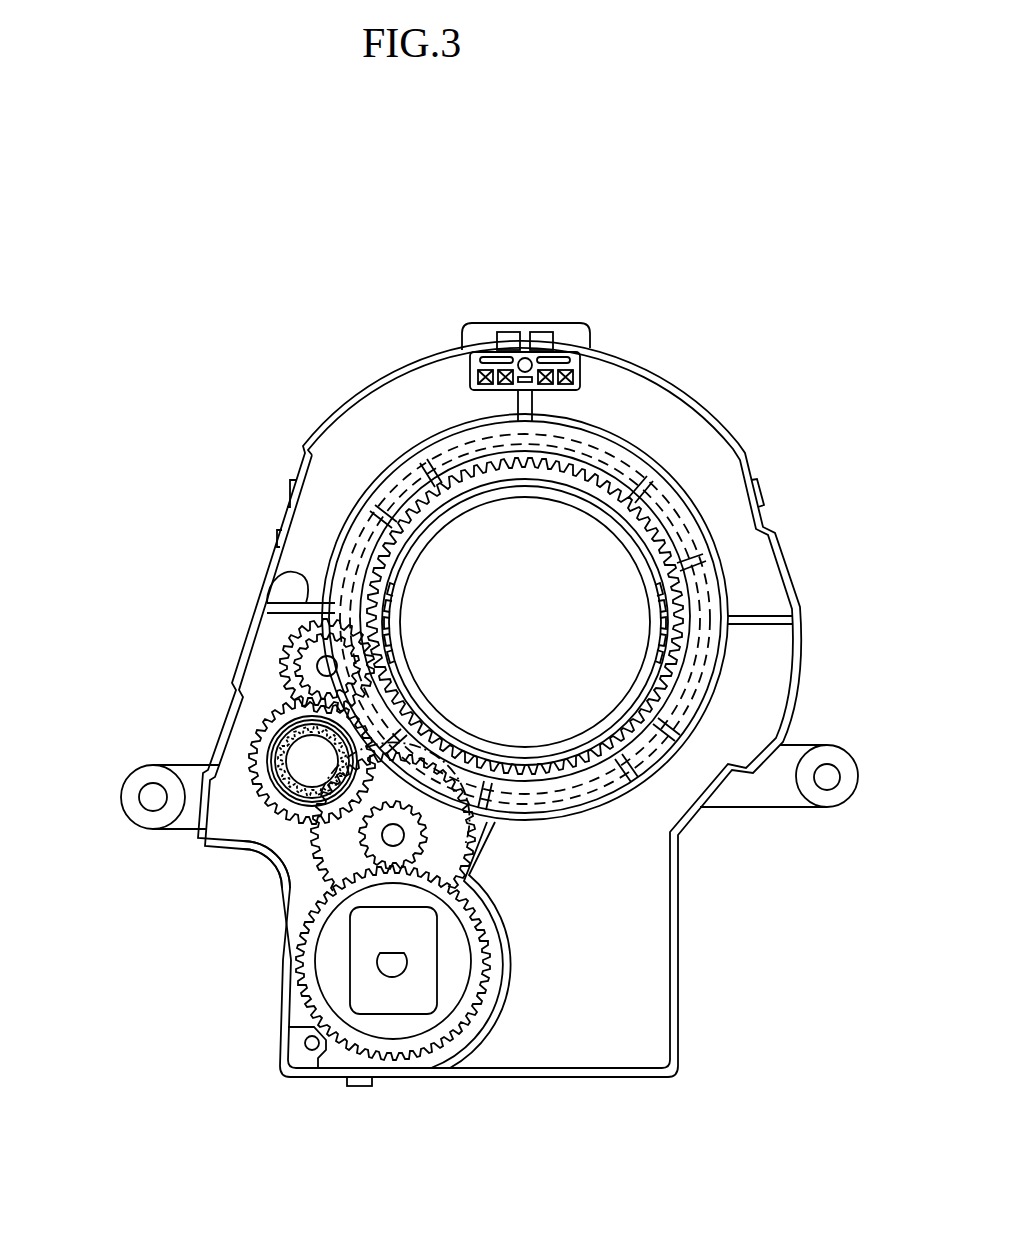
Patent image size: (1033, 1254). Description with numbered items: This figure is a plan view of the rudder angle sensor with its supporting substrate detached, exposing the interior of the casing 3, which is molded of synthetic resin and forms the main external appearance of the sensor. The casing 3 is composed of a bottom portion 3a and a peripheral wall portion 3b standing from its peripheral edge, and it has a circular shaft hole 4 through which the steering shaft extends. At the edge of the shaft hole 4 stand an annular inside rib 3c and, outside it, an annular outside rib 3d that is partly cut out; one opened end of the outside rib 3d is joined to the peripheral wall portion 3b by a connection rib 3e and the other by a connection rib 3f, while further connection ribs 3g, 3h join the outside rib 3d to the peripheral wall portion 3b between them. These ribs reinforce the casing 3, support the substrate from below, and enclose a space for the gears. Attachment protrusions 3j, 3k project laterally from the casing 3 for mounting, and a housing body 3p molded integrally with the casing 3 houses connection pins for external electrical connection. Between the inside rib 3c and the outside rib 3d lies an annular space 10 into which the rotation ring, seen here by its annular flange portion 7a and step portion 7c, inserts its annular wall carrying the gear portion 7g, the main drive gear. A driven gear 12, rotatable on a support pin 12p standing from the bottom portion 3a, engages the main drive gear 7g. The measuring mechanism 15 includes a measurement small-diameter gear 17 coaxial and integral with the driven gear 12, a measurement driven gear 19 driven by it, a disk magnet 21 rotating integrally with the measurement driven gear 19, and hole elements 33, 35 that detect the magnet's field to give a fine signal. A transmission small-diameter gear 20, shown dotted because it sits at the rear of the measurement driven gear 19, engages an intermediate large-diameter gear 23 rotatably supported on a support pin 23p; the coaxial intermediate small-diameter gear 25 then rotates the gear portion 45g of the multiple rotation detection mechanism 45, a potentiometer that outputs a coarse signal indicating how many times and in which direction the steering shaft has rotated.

The casing 3 is at (723, 275).
The bottom portion 3a is at (432, 390).
The peripheral wall portion 3b is at (373, 393).
The housing body 3p is at (468, 337).
The connection rib 3g is at (596, 350).
The inside rib 3c is at (692, 683).
The outside rib 3d is at (710, 547).
The connection rib 3e is at (302, 597).
The connection rib 3f is at (507, 915).
The connection rib 3h is at (750, 617).
The attachment protrusion 3j is at (182, 828).
The attachment protrusion 3k is at (775, 793).
The shaft hole 4 is at (453, 567).
The annular flange portion 7a is at (612, 437).
The step portion 7c is at (598, 478).
The gear portion 7g is at (703, 503).
The annular space 10 is at (601, 812).
The driven gear 12 is at (307, 662).
The support pin 12p is at (292, 683).
The measuring mechanism 15 is at (60, 648).
The measurement small-diameter gear 17 is at (285, 737).
The hole element 35 is at (275, 750).
The hole element 33 is at (250, 770).
The disk magnet 21 is at (245, 797).
The measurement driven gear 19 is at (240, 838).
The transmission small-diameter gear 20 is at (258, 842).
The intermediate large-diameter gear 23 is at (330, 840).
The support pin 23p is at (348, 893).
The intermediate small-diameter gear 25 is at (385, 840).
The multiple rotation detection mechanism 45 is at (363, 980).
The gear portion 45g is at (305, 1036).